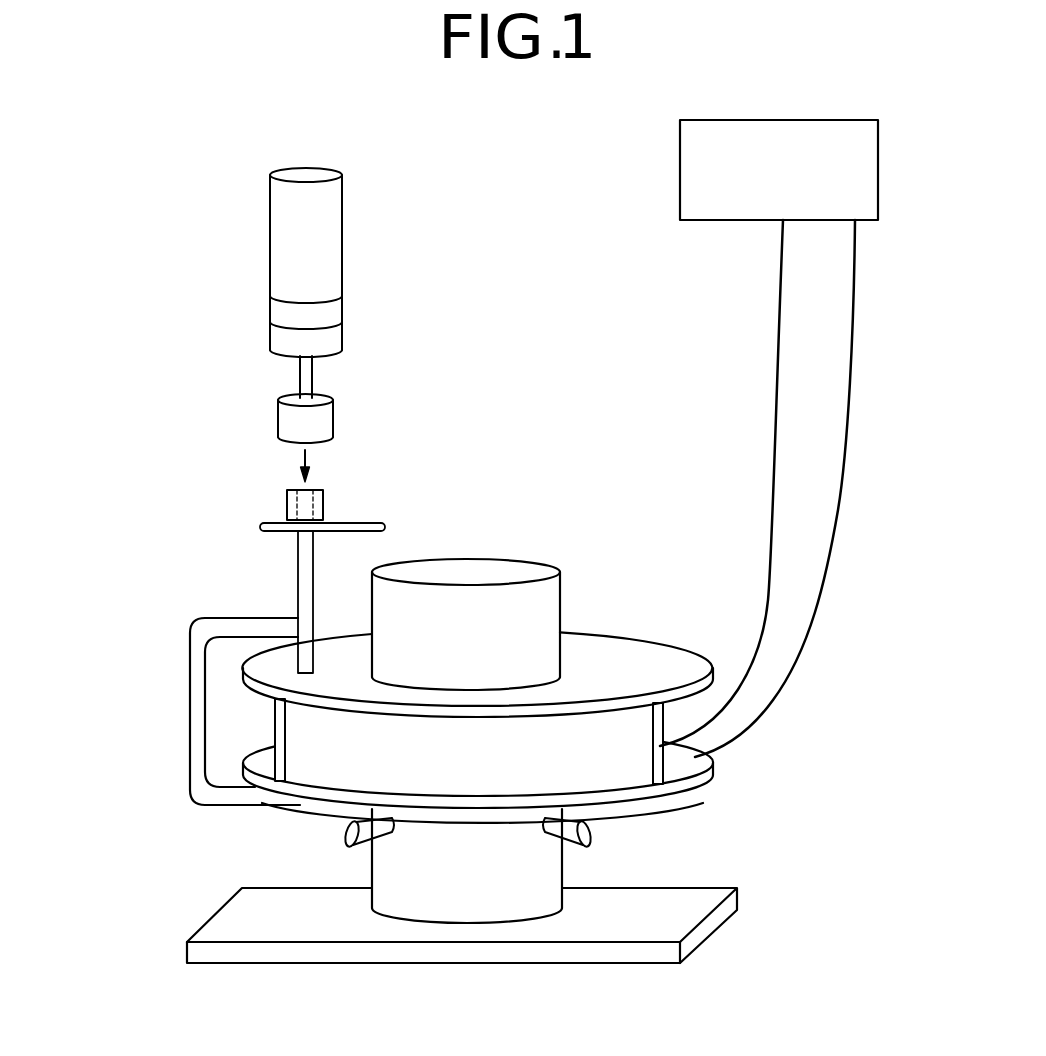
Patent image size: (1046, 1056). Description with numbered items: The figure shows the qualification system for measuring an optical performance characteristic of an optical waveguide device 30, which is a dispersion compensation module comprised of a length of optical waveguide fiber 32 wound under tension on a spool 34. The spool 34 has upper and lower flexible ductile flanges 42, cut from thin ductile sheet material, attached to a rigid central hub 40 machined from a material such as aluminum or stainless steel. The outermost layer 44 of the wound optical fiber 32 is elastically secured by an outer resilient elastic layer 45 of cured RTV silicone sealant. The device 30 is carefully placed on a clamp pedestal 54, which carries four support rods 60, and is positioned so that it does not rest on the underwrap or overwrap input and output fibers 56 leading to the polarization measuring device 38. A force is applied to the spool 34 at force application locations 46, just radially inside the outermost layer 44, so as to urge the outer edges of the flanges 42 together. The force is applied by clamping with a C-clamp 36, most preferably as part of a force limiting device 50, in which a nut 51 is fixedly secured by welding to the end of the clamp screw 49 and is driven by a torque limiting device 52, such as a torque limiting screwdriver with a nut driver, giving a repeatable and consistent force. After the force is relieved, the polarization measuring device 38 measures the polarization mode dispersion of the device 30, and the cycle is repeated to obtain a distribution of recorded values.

The optical waveguide device 30 is at (515, 628).
The optical waveguide fiber 32 is at (603, 775).
The spool 34 is at (648, 658).
The C-clamp 36 is at (182, 615).
The polarization measuring device 38 is at (789, 187).
The rigid central hub 40 is at (578, 614).
The flexible ductile flanges 42 is at (716, 632).
The outermost layer of wound optical fiber 44 is at (283, 737).
The outer resilient elastic layer 45 is at (258, 708).
The force application locations 46 is at (336, 618).
The clamp screw 49 is at (297, 545).
The force limiting device 50 is at (247, 533).
The nut 51 is at (323, 503).
The torque limiting device 52 is at (287, 237).
The clamp pedestal 54 is at (486, 548).
The input and output fibers 56 is at (762, 620).
The support rods 60 is at (345, 830).